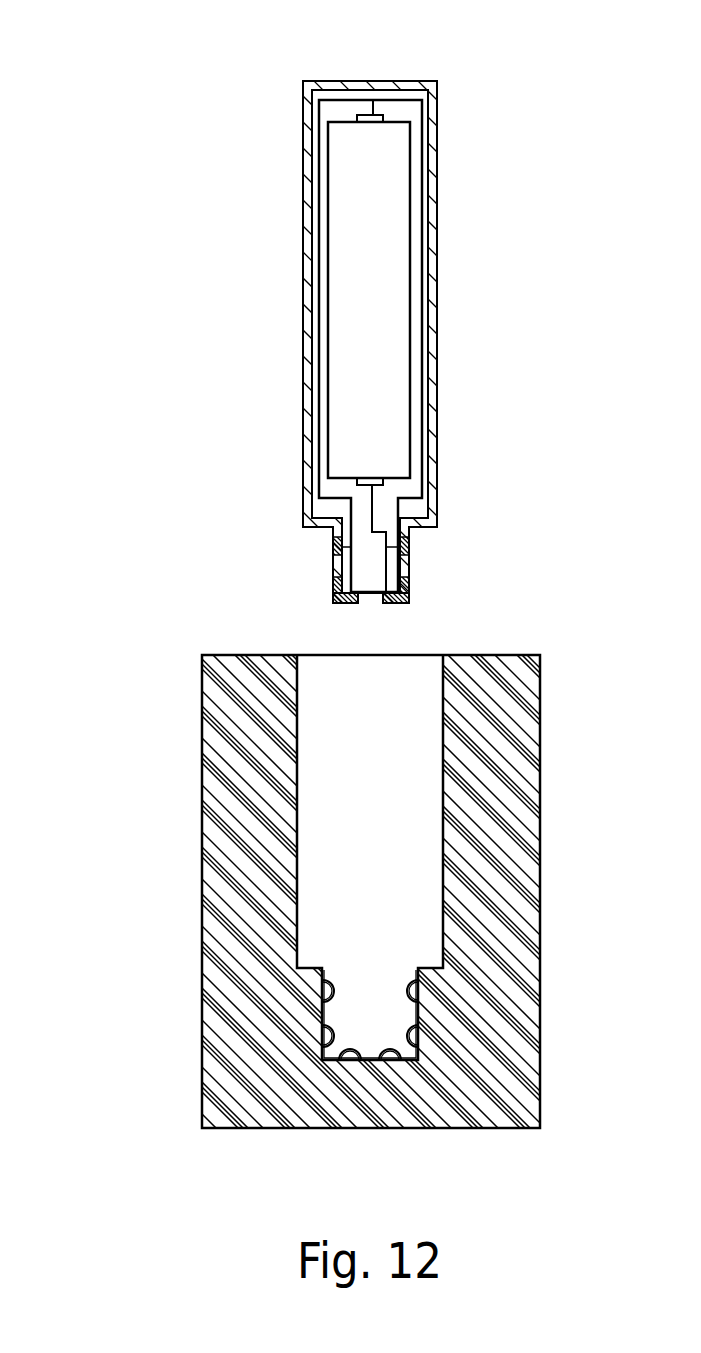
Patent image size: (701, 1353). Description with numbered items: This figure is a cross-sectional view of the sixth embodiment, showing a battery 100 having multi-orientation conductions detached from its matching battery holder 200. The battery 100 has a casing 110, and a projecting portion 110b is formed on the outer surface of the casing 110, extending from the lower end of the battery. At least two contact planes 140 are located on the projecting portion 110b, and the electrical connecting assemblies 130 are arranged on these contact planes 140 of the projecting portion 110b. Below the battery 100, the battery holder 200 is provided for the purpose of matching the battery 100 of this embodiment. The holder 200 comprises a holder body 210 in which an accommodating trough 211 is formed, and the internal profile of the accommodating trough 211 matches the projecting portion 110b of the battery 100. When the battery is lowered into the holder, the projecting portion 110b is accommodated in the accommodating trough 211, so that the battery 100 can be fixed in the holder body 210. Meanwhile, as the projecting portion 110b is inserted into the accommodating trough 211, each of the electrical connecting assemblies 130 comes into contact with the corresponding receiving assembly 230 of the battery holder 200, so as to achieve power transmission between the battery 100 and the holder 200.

The battery 100 is at (350, 325).
The casing 110 is at (350, 366).
The projecting portion 110b is at (370, 603).
The electrical connecting assemblies 130 is at (333, 548).
The contact planes 140 is at (302, 152).
The battery holder 200 is at (350, 864).
The holder body 210 is at (207, 810).
The accommodating trough 211 is at (333, 867).
The receiving assembly 230 is at (413, 1000).